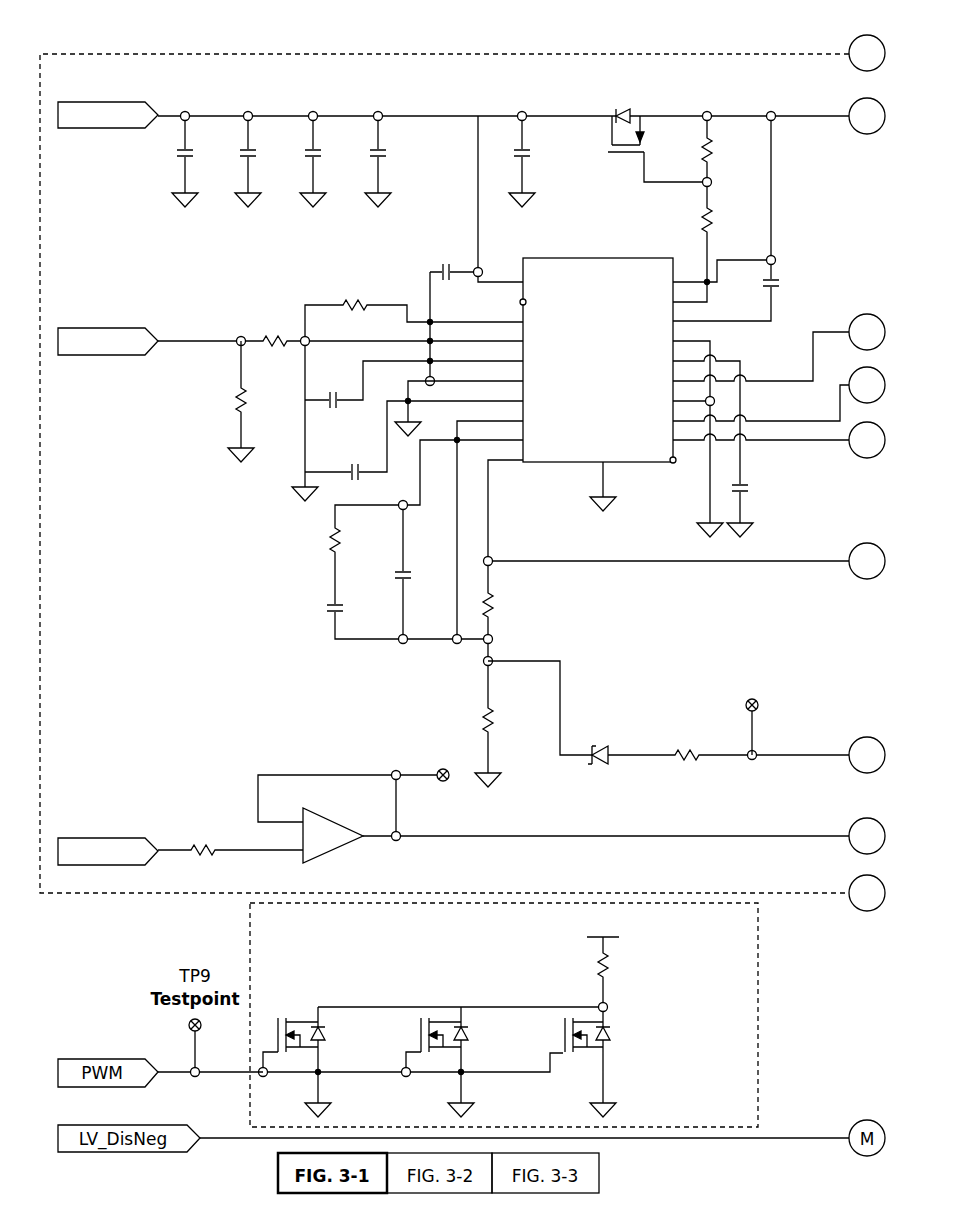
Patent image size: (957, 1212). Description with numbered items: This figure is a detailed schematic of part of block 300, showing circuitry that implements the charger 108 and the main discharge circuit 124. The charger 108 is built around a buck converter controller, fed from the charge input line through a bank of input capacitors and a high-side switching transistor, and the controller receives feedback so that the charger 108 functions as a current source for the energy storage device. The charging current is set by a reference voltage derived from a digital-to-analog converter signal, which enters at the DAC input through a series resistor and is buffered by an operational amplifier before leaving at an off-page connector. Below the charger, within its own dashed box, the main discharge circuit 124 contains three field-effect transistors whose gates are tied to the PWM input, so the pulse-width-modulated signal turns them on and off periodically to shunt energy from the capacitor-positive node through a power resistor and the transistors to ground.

The block 300 is at (185, 50).
The charger 108 is at (700, 55).
The main discharge circuit 124 is at (760, 978).